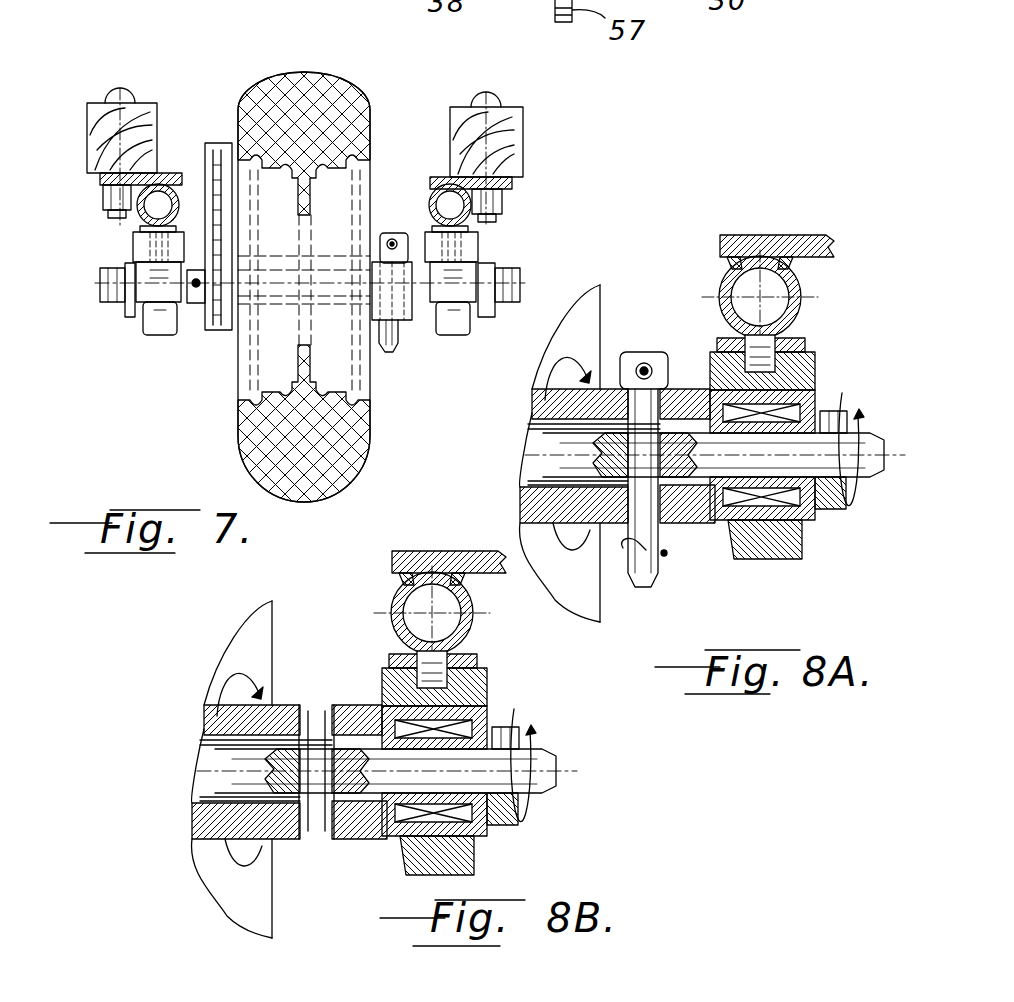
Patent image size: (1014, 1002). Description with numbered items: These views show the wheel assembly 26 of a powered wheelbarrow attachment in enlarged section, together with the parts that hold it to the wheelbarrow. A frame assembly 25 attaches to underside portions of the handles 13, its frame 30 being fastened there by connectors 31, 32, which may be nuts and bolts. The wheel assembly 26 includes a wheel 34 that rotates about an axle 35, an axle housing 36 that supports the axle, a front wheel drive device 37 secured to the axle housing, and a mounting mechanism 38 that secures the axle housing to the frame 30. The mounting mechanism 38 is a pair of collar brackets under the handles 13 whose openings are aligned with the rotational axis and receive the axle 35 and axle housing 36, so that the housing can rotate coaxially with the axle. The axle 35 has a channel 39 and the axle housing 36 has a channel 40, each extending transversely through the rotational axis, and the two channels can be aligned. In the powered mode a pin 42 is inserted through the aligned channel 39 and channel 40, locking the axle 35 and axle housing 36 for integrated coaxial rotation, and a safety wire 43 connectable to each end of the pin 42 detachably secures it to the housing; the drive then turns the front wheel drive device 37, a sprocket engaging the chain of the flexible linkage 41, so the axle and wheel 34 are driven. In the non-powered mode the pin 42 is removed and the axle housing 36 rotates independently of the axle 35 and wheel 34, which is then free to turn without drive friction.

In FIG. 7, the handles 13 is at (97, 138).
In FIG. 7, the frame assembly 25 is at (120, 225).
In FIG. 7, the wheel assembly 26 is at (248, 66).
In FIG. 8A, the frame 30 is at (800, 270).
In FIG. 8B, the frame 30 is at (392, 598).
In FIG. 7, the connector 31 is at (117, 197).
In FIG. 7, the connector 32 is at (125, 97).
In FIG. 7, the wheel 34 is at (255, 450).
In FIG. 8A, the wheel 34 is at (600, 314).
In FIG. 8B, the wheel 34 is at (232, 642).
In FIG. 7, the axle 35 is at (102, 283).
In FIG. 8A, the axle 35 is at (868, 468).
In FIG. 8B, the axle 35 is at (532, 760).
In FIG. 7, the axle housing 36 is at (382, 312).
In FIG. 8A, the axle housing 36 is at (690, 529).
In FIG. 8B, the axle housing 36 is at (195, 819).
In FIG. 7, the front wheel drive device 37 is at (212, 313).
In FIG. 7, the mounting mechanism 38 is at (147, 308).
In FIG. 8A, the mounting mechanism 38 is at (805, 374).
In FIG. 8B, the mounting mechanism 38 is at (485, 700).
In FIG. 8A, the channel 39 is at (605, 424).
In FIG. 8B, the channel 39 is at (240, 741).
In FIG. 8A, the channel 40 is at (550, 480).
In FIG. 8B, the channel 40 is at (334, 708).
In FIG. 7, the flexible linkage 41 is at (217, 163).
In FIG. 7, the pin 42 is at (395, 232).
In FIG. 8A, the pin 42 is at (655, 356).
In FIG. 7, the safety wire 43 is at (400, 329).
In FIG. 8A, the safety wire 43 is at (665, 557).